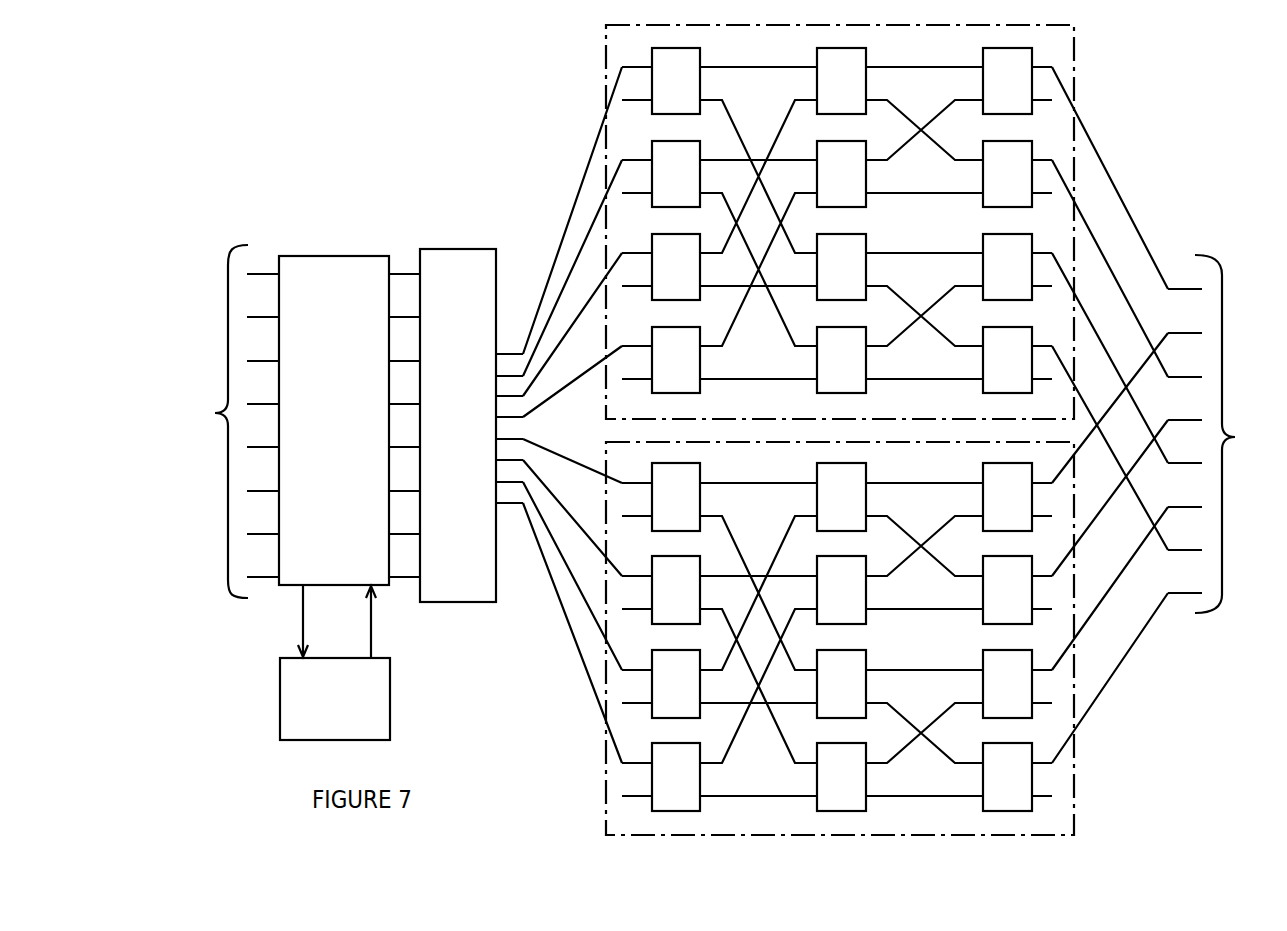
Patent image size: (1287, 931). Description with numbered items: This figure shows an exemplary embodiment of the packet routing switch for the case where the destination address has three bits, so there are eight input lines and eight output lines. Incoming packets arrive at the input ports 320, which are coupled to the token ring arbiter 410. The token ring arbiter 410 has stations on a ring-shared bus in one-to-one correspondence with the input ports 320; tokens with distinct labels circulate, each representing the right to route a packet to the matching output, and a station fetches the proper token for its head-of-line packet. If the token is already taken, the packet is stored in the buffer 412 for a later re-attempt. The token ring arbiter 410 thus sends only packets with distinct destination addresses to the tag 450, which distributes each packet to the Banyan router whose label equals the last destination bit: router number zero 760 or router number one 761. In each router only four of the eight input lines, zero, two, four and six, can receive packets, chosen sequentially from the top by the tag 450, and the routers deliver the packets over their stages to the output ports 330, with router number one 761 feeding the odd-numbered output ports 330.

The input ports 320 is at (221, 419).
The token ring arbiter 410 is at (357, 265).
The tag device 450 is at (482, 486).
The buffer 412 is at (312, 722).
The Banyan router #0 760 is at (1070, 41).
The Banyan router #1 761 is at (1065, 778).
The output ports 330 is at (1227, 434).